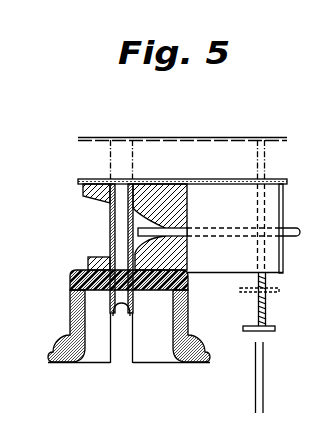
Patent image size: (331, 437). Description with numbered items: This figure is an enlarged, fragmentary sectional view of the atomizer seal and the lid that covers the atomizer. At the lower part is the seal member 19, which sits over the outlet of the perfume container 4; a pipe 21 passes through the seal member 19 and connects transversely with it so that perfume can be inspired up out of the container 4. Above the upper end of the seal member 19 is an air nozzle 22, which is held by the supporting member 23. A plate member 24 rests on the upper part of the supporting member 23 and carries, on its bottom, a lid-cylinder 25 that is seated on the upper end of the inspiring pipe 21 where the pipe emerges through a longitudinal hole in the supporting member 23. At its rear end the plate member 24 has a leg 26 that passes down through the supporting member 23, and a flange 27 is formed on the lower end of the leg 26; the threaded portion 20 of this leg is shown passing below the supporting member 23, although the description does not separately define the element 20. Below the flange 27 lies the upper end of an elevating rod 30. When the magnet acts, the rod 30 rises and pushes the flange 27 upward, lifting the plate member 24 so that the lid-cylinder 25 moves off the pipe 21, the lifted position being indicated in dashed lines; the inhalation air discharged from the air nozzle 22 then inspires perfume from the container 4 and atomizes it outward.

The perfume container 4 is at (57, 358).
The seal member 19 is at (70, 312).
The threaded adjusting rod 20 is at (257, 304).
The pipe 21 is at (112, 350).
The air nozzle 22 is at (177, 234).
The supporting member 23 is at (283, 205).
The plate member 24 is at (167, 180).
The lid-cylinder 25 is at (110, 219).
The leg 26 is at (262, 311).
The flange 27 is at (270, 331).
The elevating rod 30 is at (256, 397).